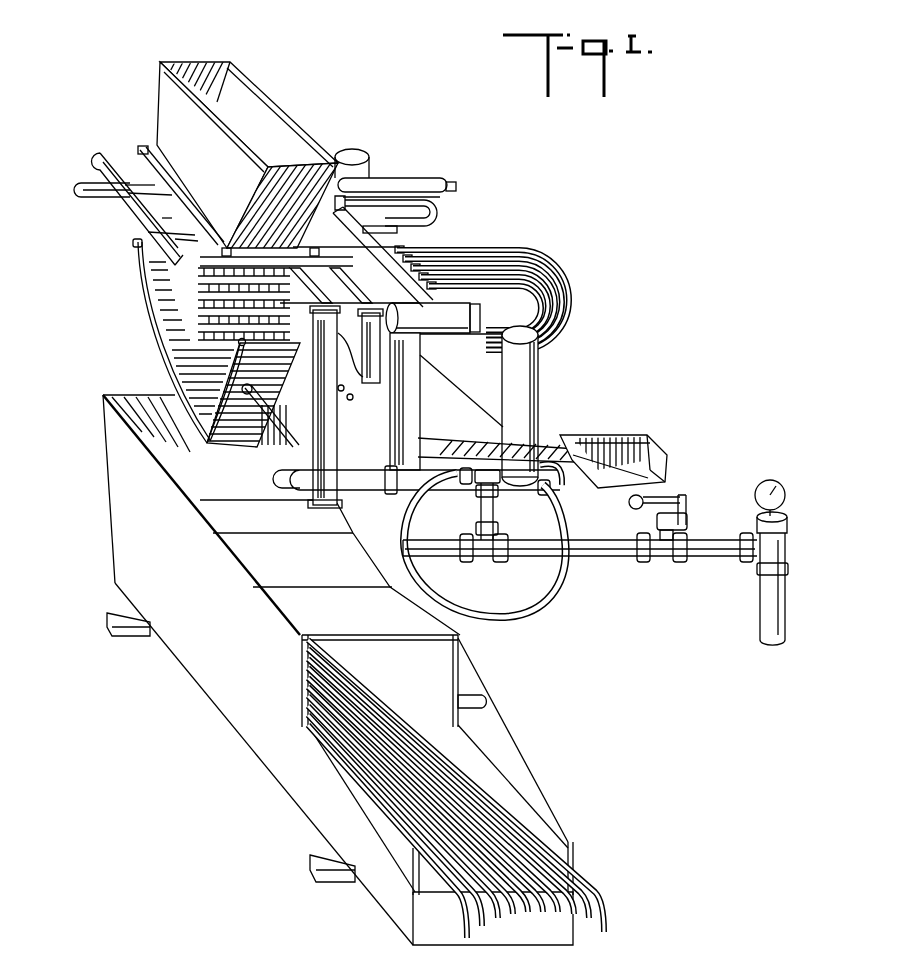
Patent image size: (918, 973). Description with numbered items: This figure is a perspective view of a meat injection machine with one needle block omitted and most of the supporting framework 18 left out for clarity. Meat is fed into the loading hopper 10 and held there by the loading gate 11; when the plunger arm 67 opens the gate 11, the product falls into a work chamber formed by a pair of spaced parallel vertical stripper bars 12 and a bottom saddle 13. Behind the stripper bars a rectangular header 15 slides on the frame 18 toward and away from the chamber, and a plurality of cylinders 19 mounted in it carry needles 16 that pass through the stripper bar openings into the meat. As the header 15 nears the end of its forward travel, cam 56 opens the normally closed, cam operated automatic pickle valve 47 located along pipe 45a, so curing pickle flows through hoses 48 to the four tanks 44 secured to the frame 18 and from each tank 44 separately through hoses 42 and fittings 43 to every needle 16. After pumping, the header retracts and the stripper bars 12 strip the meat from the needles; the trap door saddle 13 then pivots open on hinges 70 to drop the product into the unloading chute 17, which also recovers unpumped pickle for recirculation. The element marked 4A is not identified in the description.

The loading hopper 10 is at (280, 112).
The loading gate 11 is at (138, 212).
The stripper bars 12 is at (327, 425).
The bottom saddle 13 is at (158, 310).
The header 15 is at (408, 410).
The needles 16 is at (208, 315).
The unloading chute 17 is at (238, 715).
The supporting framework 18 is at (372, 368).
The cylinders 19 is at (343, 389).
The hoses 42 is at (510, 247).
The fittings 43 is at (413, 267).
The tanks 44 is at (540, 350).
The knob 4A is at (334, 150).
The pipe 45a is at (618, 553).
The cam operated automatic pickle valve 47 is at (655, 517).
The hoses 48 is at (523, 615).
The cam 56 is at (630, 455).
The plunger arm 67 is at (380, 198).
The hinges 70 is at (134, 245).